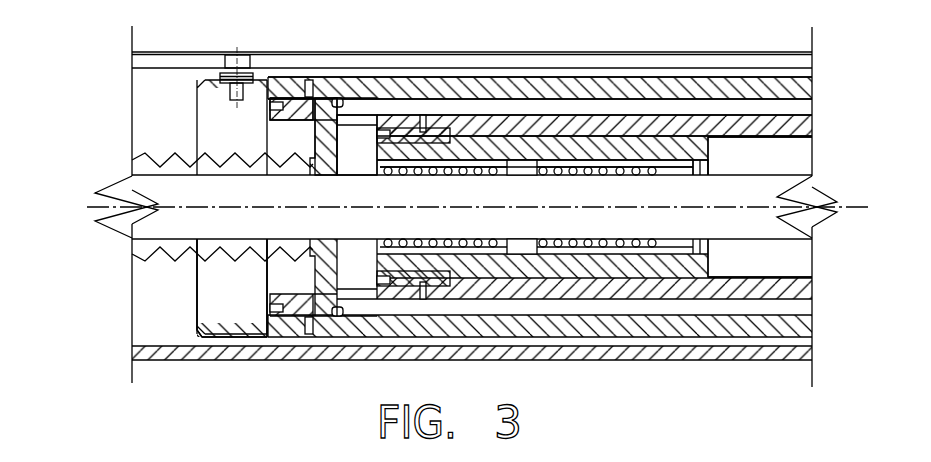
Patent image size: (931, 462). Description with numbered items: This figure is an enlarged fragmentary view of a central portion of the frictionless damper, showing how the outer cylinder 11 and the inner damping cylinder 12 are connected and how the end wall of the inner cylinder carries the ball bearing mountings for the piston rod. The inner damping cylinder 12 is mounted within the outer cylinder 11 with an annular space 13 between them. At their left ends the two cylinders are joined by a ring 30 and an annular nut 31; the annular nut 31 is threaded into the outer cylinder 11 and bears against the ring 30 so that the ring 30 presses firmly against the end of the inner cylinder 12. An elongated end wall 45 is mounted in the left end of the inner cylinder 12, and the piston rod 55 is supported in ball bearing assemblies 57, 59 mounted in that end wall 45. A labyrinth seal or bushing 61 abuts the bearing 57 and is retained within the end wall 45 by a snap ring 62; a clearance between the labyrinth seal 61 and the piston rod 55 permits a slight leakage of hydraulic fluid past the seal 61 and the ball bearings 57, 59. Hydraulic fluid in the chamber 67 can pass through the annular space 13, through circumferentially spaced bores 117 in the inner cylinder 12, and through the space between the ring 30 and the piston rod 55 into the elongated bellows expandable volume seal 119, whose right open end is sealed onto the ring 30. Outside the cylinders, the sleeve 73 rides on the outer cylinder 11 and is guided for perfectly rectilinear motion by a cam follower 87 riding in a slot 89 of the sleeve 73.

The outer cylinder 11 is at (785, 77).
The inner damping cylinder 12 is at (800, 130).
The annular space 13 is at (778, 107).
The ring 30 is at (350, 158).
The annular nut 31 is at (298, 105).
The end wall 45 is at (708, 142).
The piston rod 55 is at (785, 177).
The ball bearing assembly 57 is at (597, 172).
The ball bearing assembly 59 is at (457, 172).
The labyrinth seal 61 is at (683, 170).
The snap ring 62 is at (710, 247).
The chamber 67 is at (800, 262).
The sleeve 73 is at (463, 52).
The cam follower 87 is at (231, 55).
The slot 89 is at (650, 63).
The bores 117 is at (360, 290).
The bellows expandable volume seal 119 is at (170, 258).